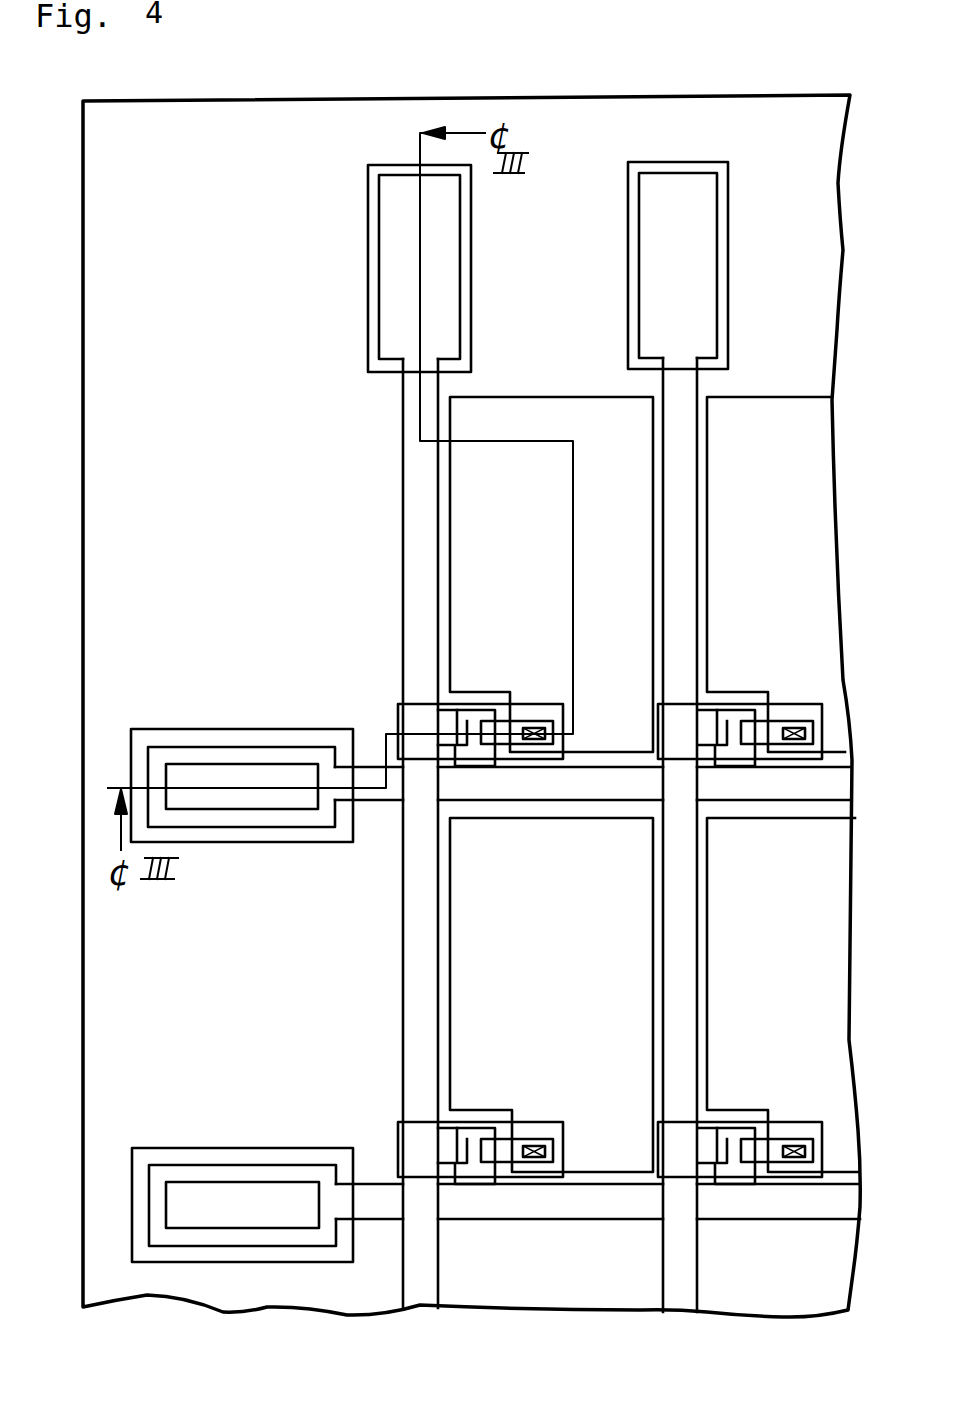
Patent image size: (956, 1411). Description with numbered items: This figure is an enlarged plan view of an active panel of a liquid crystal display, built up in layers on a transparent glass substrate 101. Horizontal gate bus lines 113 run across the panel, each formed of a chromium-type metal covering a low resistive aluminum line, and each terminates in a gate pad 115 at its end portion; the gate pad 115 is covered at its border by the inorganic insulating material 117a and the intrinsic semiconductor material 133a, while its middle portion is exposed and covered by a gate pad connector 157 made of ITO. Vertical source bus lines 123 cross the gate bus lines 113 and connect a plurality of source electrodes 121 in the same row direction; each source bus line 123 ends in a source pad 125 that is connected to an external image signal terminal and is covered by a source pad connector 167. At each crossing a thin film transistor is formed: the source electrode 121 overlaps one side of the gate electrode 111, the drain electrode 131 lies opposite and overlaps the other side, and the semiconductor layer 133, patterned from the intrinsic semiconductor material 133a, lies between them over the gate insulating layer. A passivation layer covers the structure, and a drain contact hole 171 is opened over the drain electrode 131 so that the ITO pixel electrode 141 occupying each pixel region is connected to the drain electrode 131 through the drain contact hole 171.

The transparent glass substrate 101 is at (223, 120).
The gate electrode 111 is at (473, 725).
The gate bus line 113 is at (573, 1205).
The gate pad 115 is at (243, 742).
The inorganic insulating material 117a is at (262, 765).
The intrinsic semiconductor material 133a is at (251, 734).
The source electrode 121 is at (462, 1155).
The source bus line 123 is at (420, 577).
The source pad 125 is at (720, 266).
The drain electrode 131 is at (793, 722).
The semiconductor layer 133 is at (735, 1125).
The pixel electrode 141 is at (555, 413).
The gate pad connector 157 is at (237, 1148).
The source pad connector 167 is at (368, 234).
The drain contact hole 171 is at (793, 1144).